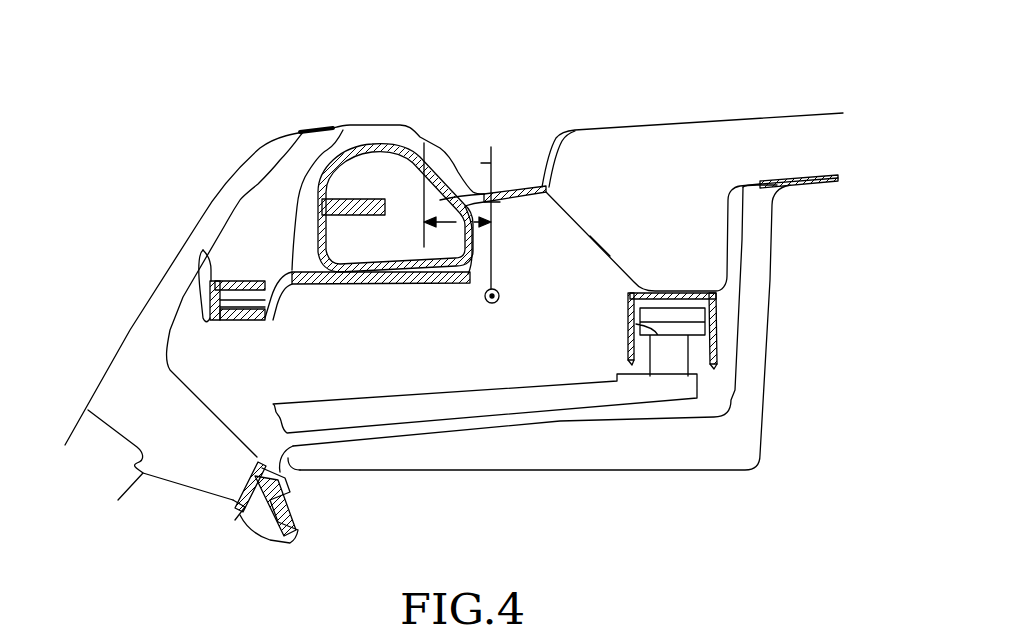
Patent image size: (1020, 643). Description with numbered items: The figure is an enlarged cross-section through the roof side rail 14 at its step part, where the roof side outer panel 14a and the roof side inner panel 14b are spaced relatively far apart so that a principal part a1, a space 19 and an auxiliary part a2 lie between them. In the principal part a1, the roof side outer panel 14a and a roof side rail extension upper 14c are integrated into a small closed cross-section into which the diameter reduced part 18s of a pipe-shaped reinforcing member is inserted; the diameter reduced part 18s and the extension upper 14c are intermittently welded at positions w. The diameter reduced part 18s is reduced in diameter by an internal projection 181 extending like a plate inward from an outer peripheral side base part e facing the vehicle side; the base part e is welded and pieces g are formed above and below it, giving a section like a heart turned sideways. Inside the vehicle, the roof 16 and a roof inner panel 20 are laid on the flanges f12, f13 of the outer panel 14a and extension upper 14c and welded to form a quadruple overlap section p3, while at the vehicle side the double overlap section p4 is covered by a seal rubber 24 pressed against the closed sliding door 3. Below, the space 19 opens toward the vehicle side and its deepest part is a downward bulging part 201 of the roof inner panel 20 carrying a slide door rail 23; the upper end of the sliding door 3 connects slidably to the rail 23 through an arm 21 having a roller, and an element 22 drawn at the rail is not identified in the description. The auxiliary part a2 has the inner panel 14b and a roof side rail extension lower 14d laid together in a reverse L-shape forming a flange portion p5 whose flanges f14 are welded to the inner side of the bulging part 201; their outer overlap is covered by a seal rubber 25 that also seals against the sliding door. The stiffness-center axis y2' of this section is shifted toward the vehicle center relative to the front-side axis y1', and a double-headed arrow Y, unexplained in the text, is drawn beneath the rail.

The roof side rail 14 is at (336, 102).
The roof side outer panel 14a is at (427, 133).
The roof side inner panel 14b is at (650, 472).
The roof side rail extension upper 14c is at (420, 284).
The roof side rail extension lower 14d is at (553, 420).
The roof 16 is at (768, 121).
The diameter reduced part 18s is at (449, 153).
The internal projection 181 is at (363, 215).
The space 19 is at (375, 371).
The roof inner panel 20 is at (585, 258).
The downward bulging part 201 is at (624, 270).
The arm 21 is at (478, 388).
The clip 22 is at (640, 334).
The slide door rail 23 is at (713, 353).
The seal rubber 24 is at (224, 326).
The seal rubber 25 is at (287, 547).
The rear door (sliding door) 3 is at (92, 397).
The principal part a1 is at (495, 245).
The auxiliary part a2 is at (780, 438).
The quadruple overlap section p3 is at (534, 172).
The double overlap section p4 is at (283, 318).
The flange portion p5 is at (824, 163).
The flange f12 is at (545, 187).
The flange f13 is at (546, 189).
The flanges f14 is at (832, 186).
The axis y1' is at (390, 118).
The axis y2' is at (516, 322).
The outer peripheral side base part e is at (325, 199).
The pieces g is at (318, 193).
The welded positions w is at (318, 264).
The Y direction Y is at (506, 549).